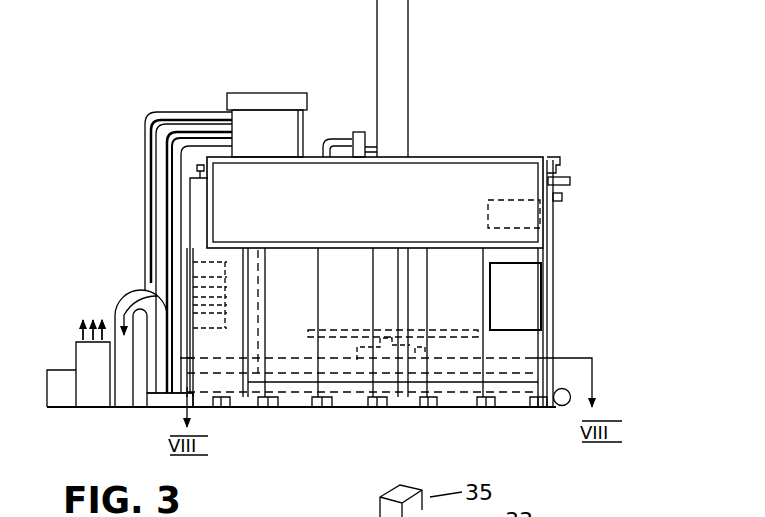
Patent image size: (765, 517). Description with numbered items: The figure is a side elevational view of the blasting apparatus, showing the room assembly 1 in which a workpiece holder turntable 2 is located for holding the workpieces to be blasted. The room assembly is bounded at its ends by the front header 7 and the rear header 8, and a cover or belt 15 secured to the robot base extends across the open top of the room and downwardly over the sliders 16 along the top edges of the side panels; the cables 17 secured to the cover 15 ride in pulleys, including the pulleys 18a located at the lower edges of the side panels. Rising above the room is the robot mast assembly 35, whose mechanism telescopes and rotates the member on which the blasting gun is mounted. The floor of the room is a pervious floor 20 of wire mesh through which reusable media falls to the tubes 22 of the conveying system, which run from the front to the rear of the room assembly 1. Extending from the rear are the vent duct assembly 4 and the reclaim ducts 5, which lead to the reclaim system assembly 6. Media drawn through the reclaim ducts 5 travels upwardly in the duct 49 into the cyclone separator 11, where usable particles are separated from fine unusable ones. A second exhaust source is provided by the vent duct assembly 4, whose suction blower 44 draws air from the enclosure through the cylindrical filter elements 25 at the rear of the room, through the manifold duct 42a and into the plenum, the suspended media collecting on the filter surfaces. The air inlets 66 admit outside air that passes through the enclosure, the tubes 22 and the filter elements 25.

The room assembly 1 is at (585, 265).
The workpiece holder turntable 2 is at (438, 328).
The vent duct assembly 4 is at (141, 252).
The reclaim ducts 5 is at (162, 188).
The reclaim system assembly 6 is at (269, 88).
The front header 7 is at (550, 210).
The rear header 8 is at (205, 210).
The cyclone separator 11 is at (265, 125).
The cover or belt 15 is at (467, 165).
The sliders 16 is at (547, 157).
The cables 17 is at (368, 264).
The pulleys 18a is at (220, 408).
The pervious floor 20 is at (513, 367).
The tubes 22 is at (163, 400).
The cylindrical filter elements 25 is at (265, 273).
The robot mast assembly 35 is at (390, 105).
The duct 42a is at (117, 307).
The suction blower 44 is at (90, 403).
The duct 49 is at (140, 213).
The air inlets 66 is at (507, 222).